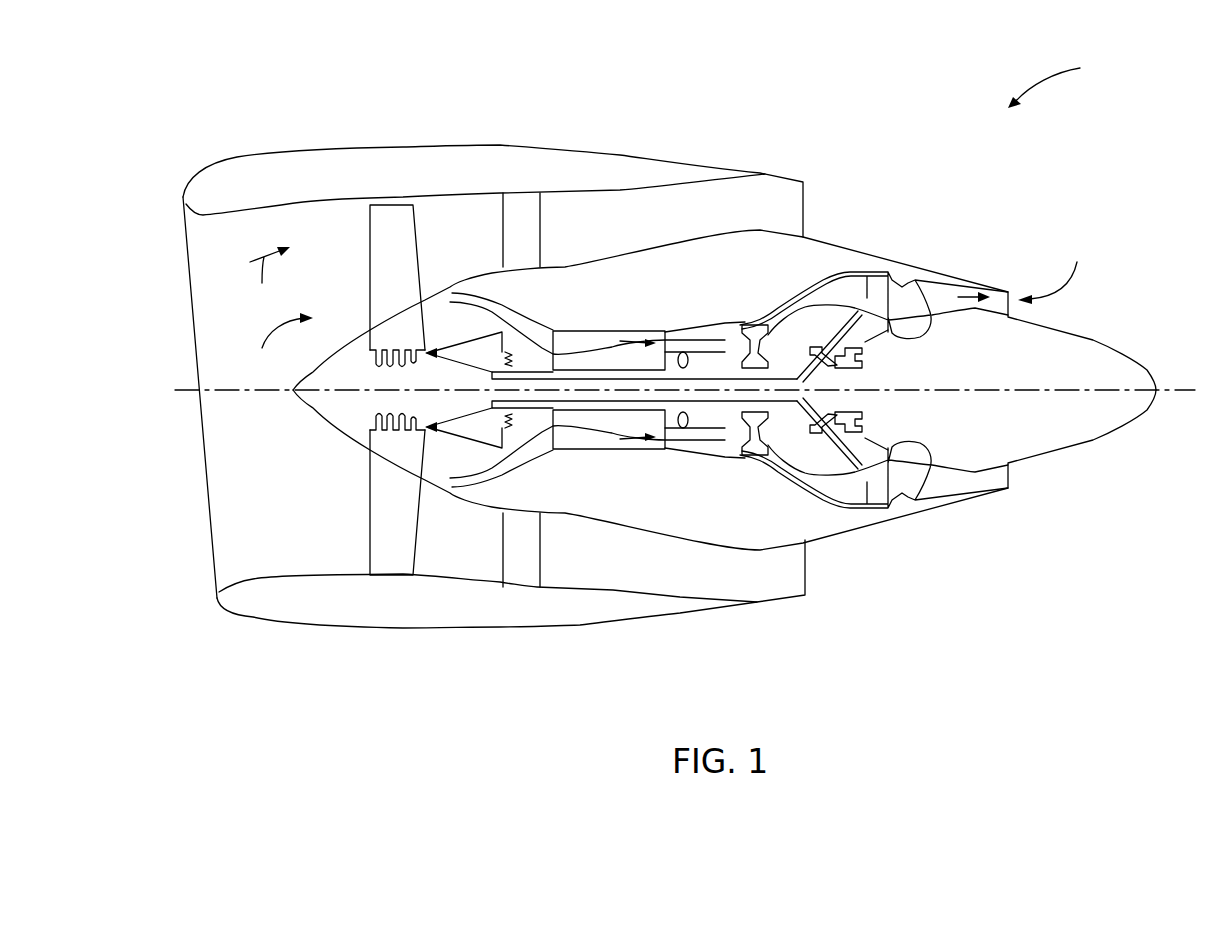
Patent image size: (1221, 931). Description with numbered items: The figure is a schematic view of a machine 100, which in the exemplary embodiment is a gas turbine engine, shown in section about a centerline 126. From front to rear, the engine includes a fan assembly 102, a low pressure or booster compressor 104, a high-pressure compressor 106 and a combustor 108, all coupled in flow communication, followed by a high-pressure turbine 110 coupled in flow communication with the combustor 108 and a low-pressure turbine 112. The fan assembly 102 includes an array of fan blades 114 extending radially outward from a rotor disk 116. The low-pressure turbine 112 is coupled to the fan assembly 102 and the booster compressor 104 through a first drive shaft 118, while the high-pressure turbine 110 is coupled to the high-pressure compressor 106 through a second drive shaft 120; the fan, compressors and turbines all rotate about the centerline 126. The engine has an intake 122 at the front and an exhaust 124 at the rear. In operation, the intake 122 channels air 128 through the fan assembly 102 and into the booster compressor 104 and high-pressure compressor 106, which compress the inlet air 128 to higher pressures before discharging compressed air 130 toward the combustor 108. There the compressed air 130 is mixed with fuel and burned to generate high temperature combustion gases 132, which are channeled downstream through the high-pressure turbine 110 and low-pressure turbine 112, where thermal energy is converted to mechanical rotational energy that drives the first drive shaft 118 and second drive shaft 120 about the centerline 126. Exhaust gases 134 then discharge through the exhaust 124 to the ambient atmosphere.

The gas turbine engine 100 is at (1065, 83).
The fan assembly 102 is at (276, 347).
The booster compressor 104 is at (458, 285).
The high-pressure compressor 106 is at (580, 340).
The combustor 108 is at (715, 333).
The high-pressure turbine 110 is at (749, 460).
The low-pressure turbine 112 is at (806, 300).
The fan blades 114 is at (418, 272).
The rotor disk 116 is at (367, 350).
The first drive shaft 118 is at (550, 457).
The second drive shaft 120 is at (685, 355).
The intake 122 is at (206, 260).
The exhaust 124 is at (1058, 270).
The centerline 126 is at (1182, 385).
The air 128 is at (266, 282).
The compressed air 130 is at (630, 340).
The combustion gases 132 is at (748, 318).
The exhaust gases 134 is at (965, 292).